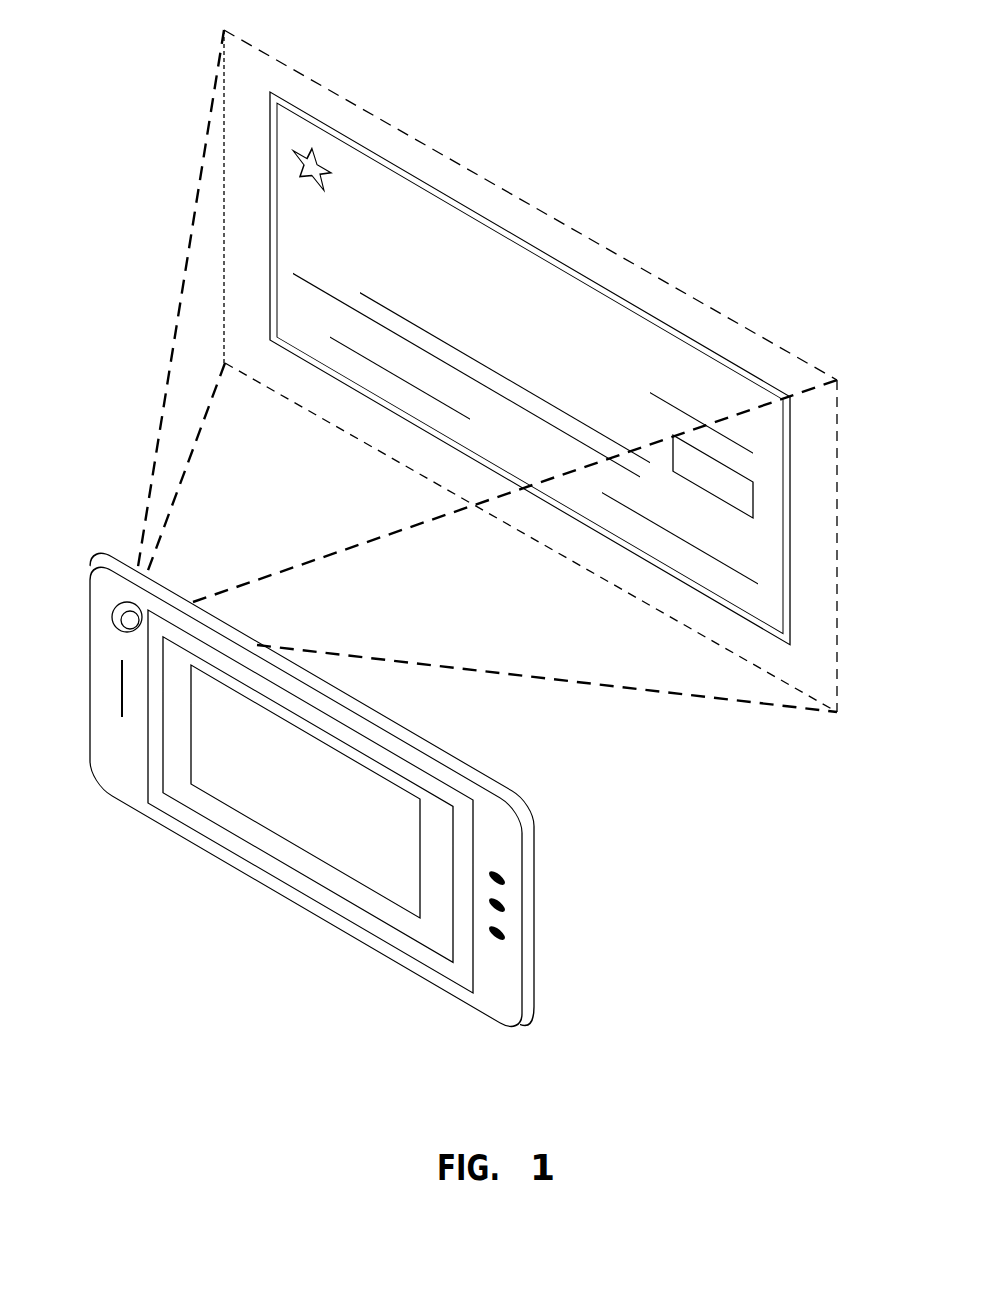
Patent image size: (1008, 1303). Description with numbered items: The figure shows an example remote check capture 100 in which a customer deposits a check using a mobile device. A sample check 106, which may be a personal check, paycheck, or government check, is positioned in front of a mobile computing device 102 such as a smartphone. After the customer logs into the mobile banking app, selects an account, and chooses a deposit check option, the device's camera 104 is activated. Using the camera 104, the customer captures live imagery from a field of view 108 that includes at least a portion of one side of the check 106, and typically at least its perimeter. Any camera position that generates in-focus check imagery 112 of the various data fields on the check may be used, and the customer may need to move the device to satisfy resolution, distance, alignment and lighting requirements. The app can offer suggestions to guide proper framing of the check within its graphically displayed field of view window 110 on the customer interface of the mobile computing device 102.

The remote check capture 100 is at (883, 76).
The mobile computing device 102 is at (357, 761).
The camera 104 is at (113, 607).
The check 106 is at (692, 337).
The field of view 108 is at (373, 113).
The field of view window 110 is at (310, 801).
The check imagery 112 is at (305, 791).